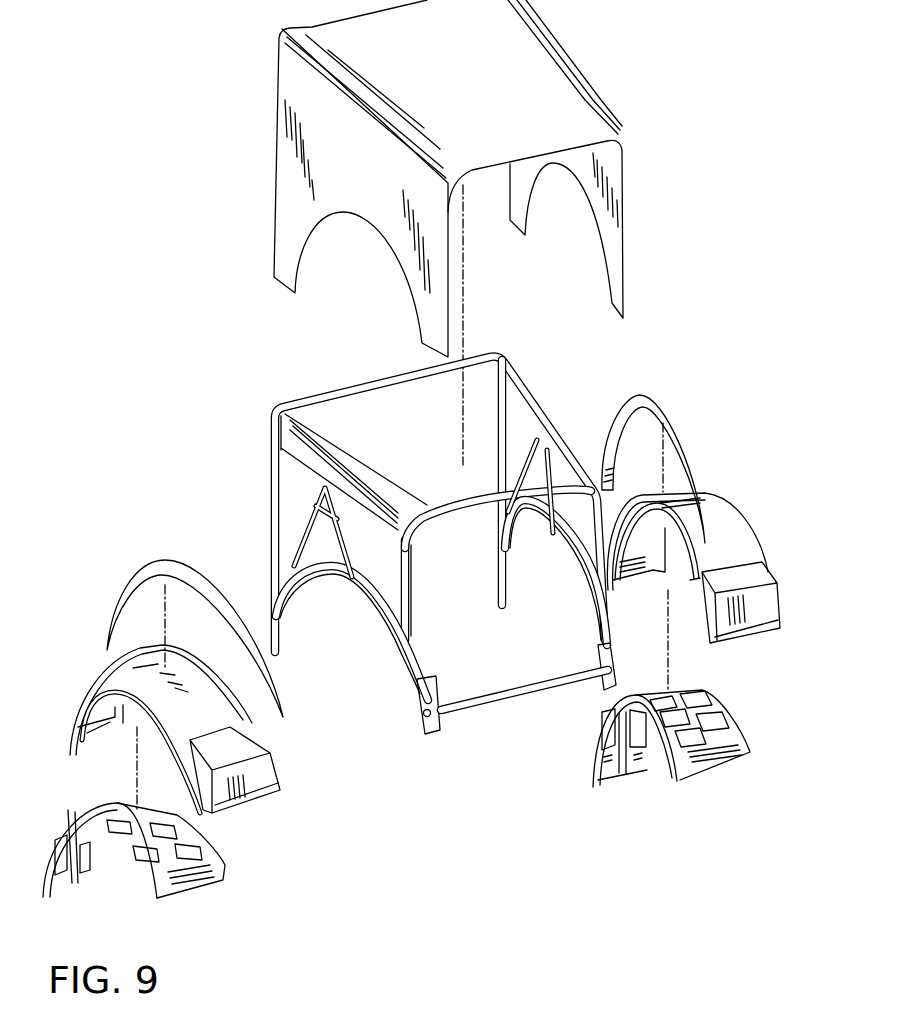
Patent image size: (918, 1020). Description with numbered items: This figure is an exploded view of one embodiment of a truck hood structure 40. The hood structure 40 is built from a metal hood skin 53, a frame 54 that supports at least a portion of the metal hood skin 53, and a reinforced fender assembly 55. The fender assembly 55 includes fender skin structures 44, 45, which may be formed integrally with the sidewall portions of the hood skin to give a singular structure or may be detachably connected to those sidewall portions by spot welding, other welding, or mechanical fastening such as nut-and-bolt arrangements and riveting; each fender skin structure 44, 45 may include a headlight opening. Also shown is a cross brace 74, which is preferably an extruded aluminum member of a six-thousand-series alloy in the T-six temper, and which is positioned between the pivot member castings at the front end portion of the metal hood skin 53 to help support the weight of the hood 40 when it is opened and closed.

The hood structure 40 is at (665, 112).
The metal hood skin 53 is at (452, 86).
The frame 54 is at (418, 458).
The cross brace 74 is at (517, 698).
The reinforced fender assembly 55 is at (718, 468).
The fender skin structure 44 is at (714, 556).
The fender skin structure 45 is at (184, 718).